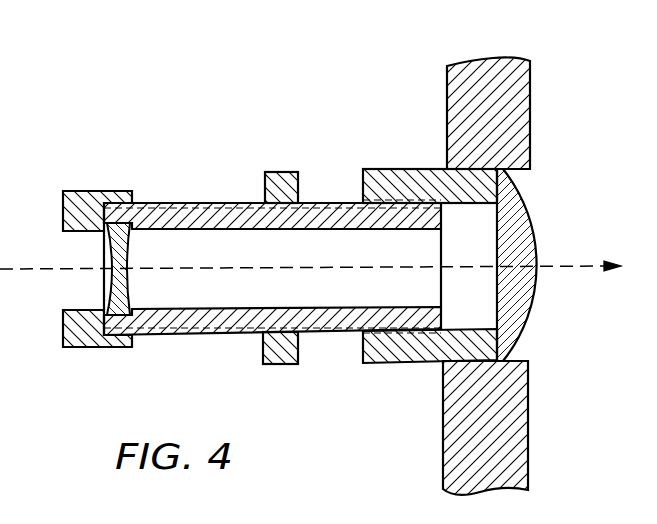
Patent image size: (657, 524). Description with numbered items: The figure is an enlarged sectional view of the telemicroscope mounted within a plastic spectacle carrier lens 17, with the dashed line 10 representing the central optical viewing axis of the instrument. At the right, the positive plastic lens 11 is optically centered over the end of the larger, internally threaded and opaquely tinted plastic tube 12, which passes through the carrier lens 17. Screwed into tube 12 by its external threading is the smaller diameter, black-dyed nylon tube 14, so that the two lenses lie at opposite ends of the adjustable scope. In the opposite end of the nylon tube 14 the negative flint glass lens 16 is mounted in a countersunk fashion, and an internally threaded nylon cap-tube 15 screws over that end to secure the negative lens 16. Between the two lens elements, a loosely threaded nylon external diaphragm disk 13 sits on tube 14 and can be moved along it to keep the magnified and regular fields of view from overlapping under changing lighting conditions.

The central optical viewing axis 10 is at (583, 262).
The positive plastic lens 11 is at (531, 326).
The internally threaded plastic tube 12 is at (404, 366).
The external diaphragm disk 13 is at (283, 366).
The negative element nylon tube 14 is at (205, 333).
The nylon cap-tube 15 is at (98, 348).
The negative flint glass lens 16 is at (112, 289).
The carrier lens 17 is at (523, 451).